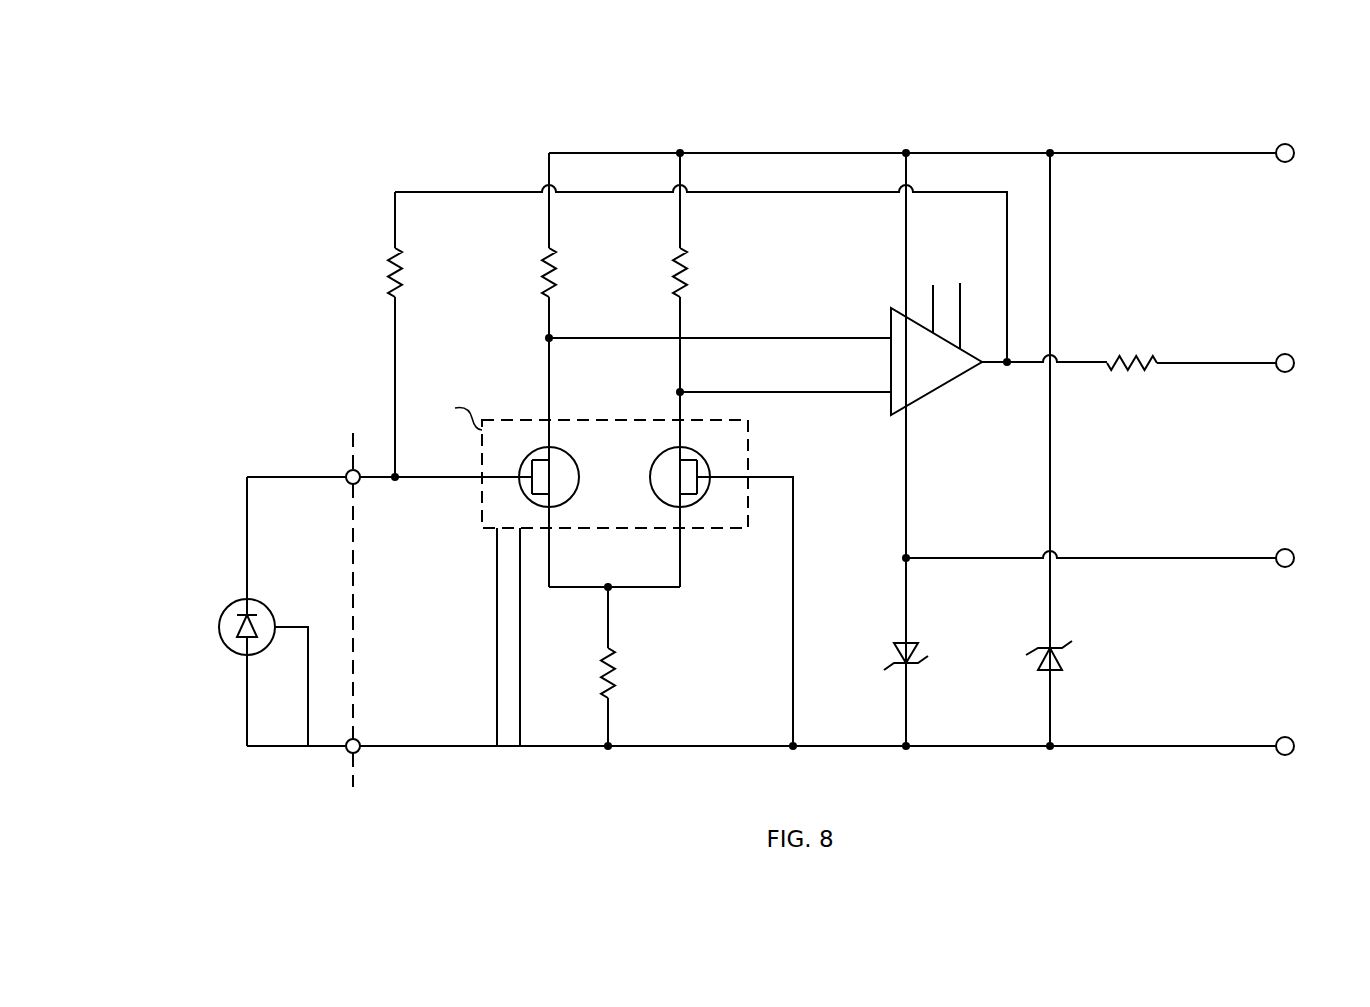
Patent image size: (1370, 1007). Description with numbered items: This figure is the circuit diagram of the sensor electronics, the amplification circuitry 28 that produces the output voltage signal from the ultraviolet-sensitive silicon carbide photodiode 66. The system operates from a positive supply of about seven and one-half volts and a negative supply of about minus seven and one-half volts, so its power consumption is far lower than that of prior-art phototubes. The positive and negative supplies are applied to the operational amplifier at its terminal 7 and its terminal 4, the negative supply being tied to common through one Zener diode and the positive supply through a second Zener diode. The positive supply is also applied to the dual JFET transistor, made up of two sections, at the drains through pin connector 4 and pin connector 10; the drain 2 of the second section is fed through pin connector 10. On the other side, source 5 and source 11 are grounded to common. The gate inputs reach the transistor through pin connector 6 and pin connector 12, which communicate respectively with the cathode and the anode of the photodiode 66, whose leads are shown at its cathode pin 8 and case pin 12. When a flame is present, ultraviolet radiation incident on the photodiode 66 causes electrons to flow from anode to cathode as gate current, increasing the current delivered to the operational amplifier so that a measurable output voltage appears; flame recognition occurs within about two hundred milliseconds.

The temperature sensing amplifier circuit 28 is at (817, 120).
The photodiode 66 is at (255, 611).
The sensor cathode pin 8 is at (258, 538).
The drain 2 is at (259, 700).
The pin connector 12 is at (534, 597).
The pin connector 4 is at (536, 419).
The pin connector 10 is at (661, 419).
The pin connector 6 is at (496, 456).
The source 5 is at (559, 547).
The source 11 is at (697, 547).
The terminal 7 is at (519, 637).